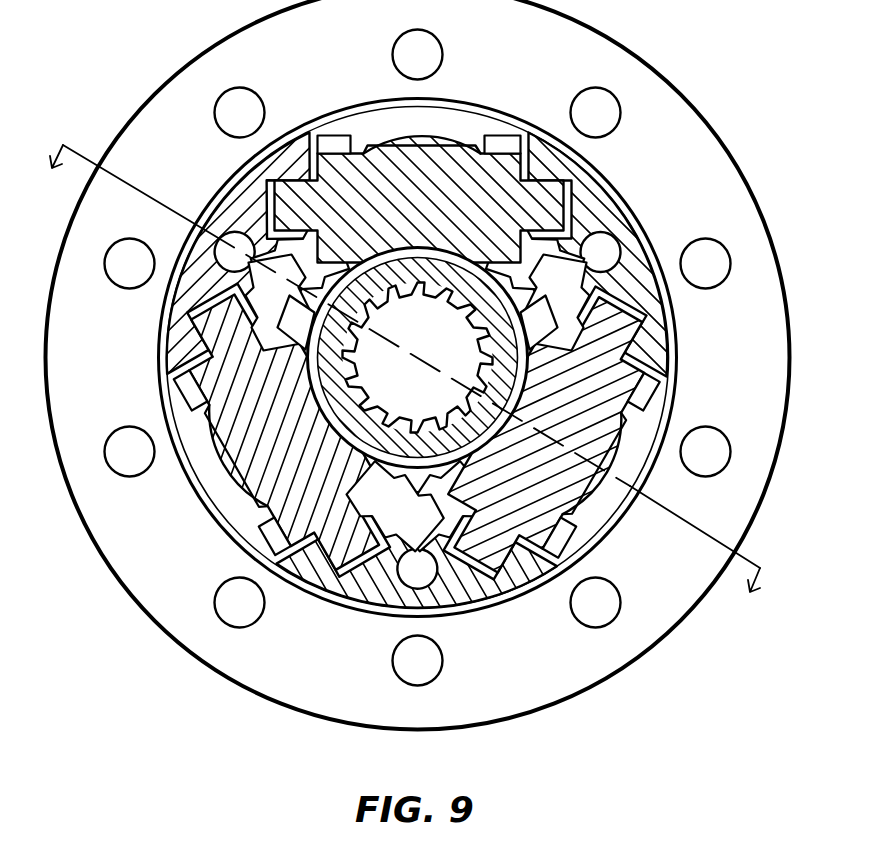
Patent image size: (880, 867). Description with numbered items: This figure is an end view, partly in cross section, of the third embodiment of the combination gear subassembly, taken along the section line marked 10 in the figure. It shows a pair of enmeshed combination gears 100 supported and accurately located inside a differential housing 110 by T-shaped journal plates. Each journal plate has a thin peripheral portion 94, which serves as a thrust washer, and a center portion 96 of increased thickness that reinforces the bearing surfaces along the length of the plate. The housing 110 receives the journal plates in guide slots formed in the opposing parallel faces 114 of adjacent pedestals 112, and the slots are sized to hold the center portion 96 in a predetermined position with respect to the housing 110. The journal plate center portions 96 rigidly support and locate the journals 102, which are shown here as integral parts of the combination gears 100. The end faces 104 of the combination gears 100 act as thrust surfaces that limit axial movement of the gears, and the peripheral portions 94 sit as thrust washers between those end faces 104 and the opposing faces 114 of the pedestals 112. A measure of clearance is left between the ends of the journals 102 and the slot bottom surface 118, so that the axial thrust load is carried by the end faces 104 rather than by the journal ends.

The section line 10- 10 is at (416, 354).
The thin peripheral portion 94 is at (303, 156).
The center portion 96 is at (280, 165).
The combination gear 100 is at (438, 218).
The journal 102 is at (296, 322).
The end face 104 is at (526, 352).
The differential housing 110 is at (158, 645).
The pedestal 112 is at (612, 201).
The opposing parallel face 114 is at (187, 352).
The slot bottom surface 118 is at (490, 555).